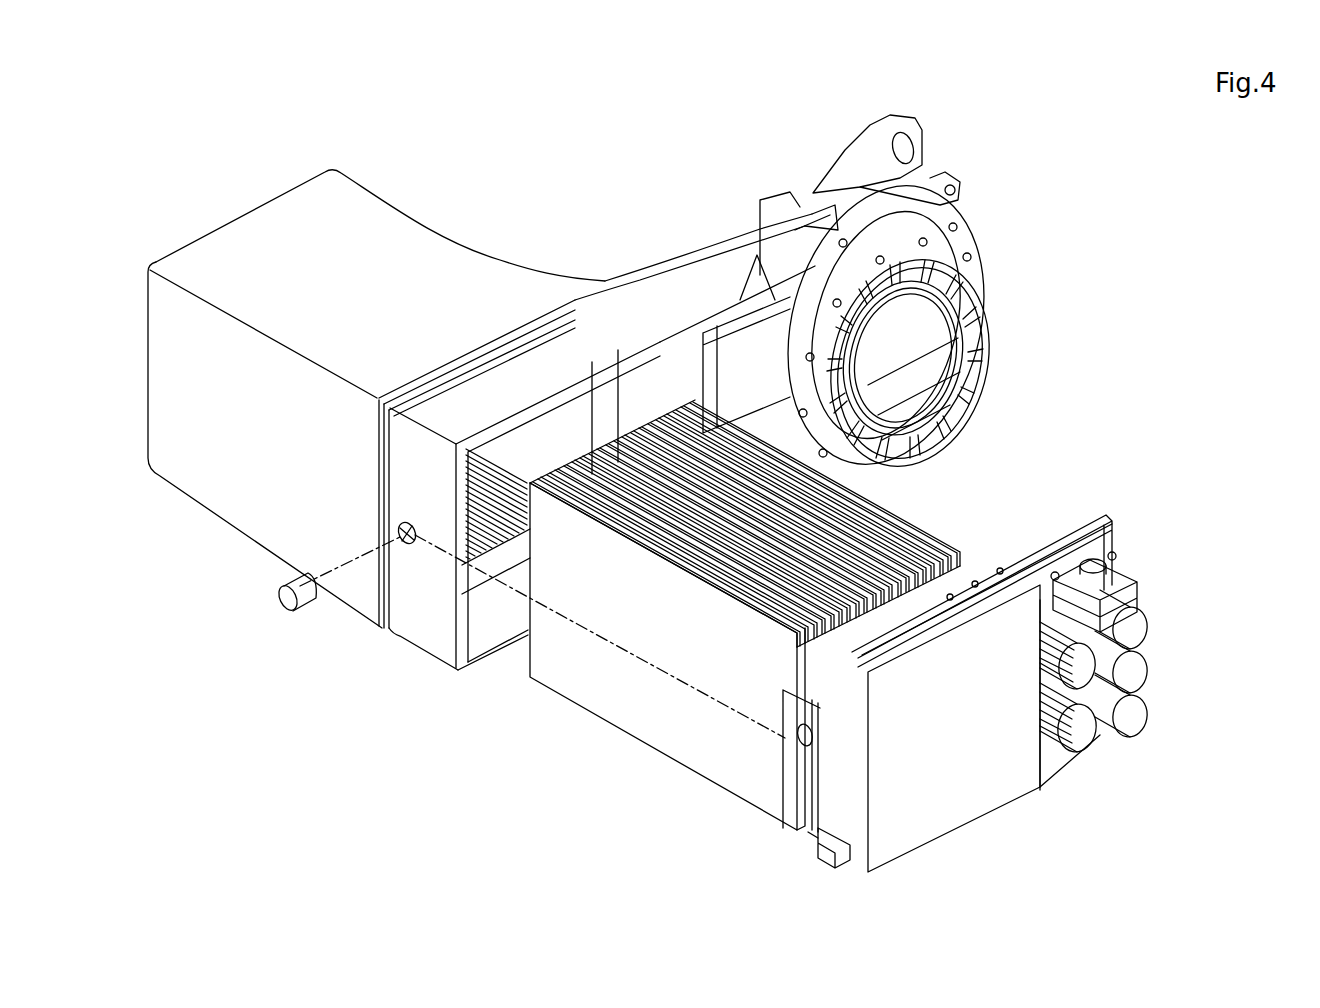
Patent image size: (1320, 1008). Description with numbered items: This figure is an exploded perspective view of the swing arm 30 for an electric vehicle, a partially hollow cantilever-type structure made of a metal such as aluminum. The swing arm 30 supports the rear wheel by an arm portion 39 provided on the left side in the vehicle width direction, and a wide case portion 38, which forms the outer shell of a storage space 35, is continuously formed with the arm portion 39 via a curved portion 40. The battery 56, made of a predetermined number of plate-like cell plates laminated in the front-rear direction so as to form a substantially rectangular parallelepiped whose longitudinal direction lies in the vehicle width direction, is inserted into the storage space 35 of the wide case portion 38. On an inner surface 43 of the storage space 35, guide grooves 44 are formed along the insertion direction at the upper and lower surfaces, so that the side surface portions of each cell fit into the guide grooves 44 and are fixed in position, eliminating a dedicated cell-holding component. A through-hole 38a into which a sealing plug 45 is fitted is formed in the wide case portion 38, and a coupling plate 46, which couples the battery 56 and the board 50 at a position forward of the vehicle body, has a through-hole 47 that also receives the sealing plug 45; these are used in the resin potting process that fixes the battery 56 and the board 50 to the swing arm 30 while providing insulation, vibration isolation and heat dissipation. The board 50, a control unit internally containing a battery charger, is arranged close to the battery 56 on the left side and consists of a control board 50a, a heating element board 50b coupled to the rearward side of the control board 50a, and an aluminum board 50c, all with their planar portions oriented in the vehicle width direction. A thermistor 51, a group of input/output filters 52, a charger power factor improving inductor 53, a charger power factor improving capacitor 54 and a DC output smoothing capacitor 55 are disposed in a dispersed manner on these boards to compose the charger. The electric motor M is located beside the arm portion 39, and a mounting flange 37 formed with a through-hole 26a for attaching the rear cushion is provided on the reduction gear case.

The swing arm 30 is at (698, 170).
The storage space 35 is at (384, 213).
The mounting flange 37 is at (877, 153).
The through-hole 26a is at (905, 150).
The wide case portion 38 is at (405, 646).
The through-hole 38a is at (400, 547).
The arm portion 39 is at (757, 248).
The curved portion 40 is at (600, 282).
The electric motor M is at (937, 352).
The inner surface 43 is at (485, 648).
The guide grooves 44 is at (477, 570).
The sealing plug 45 is at (283, 600).
The coupling plate 46 is at (788, 755).
The through-hole 47 is at (818, 818).
The board (control unit) 50 is at (1049, 684).
The control board 50a is at (920, 826).
The heating element board 50b is at (1100, 718).
The aluminum board 50c is at (1003, 570).
The thermistor 51 is at (1093, 565).
The group of input/output filters 52 is at (1153, 613).
The charger power factor improving inductor 53 is at (1080, 665).
The charger power factor improving capacitor 54 is at (1075, 733).
The DC output smoothing capacitor 55 is at (1148, 673).
The battery 56 is at (985, 522).